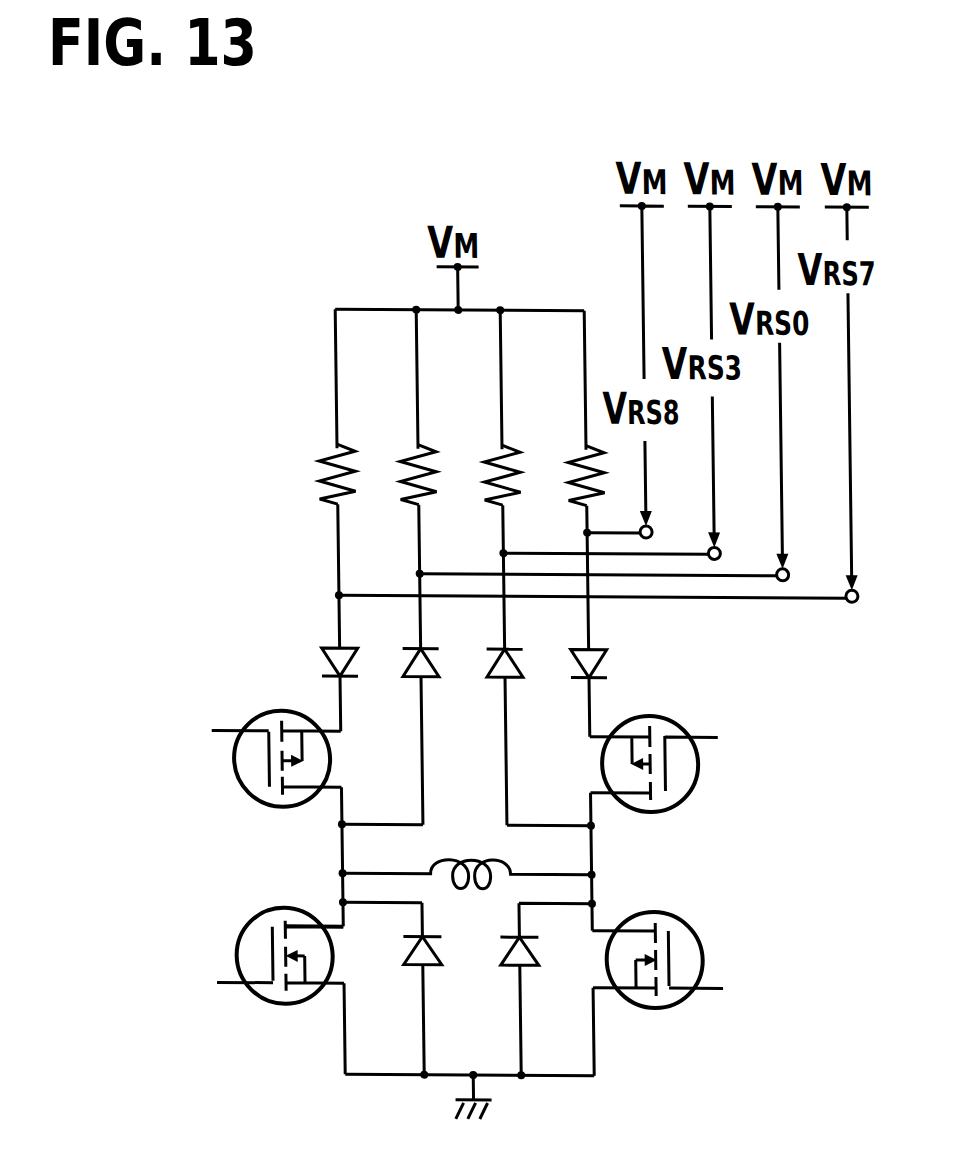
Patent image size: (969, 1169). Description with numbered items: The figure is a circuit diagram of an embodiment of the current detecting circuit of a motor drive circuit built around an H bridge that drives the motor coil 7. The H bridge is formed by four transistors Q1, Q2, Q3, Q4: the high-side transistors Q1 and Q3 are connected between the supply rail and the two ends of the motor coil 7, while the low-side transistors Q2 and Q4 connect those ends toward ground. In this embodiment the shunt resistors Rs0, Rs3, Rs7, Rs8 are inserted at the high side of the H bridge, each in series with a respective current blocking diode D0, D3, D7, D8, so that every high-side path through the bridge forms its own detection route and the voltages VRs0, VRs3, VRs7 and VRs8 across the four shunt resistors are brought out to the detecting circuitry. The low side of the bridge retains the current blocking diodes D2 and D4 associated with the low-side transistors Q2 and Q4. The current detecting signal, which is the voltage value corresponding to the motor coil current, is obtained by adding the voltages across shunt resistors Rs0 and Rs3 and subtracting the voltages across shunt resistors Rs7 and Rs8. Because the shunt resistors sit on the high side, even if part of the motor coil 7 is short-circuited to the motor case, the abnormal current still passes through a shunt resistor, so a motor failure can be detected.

The motor coil 7 is at (464, 852).
The shunt resistor Rs7 is at (339, 446).
The shunt resistor Rs0 is at (420, 446).
The shunt resistor Rs3 is at (504, 446).
The shunt resistor Rs8 is at (588, 446).
The current blocking diode D7 is at (337, 648).
The current blocking diode D0 is at (418, 678).
The current blocking diode D3 is at (505, 678).
The current blocking diode D8 is at (590, 650).
The current blocking diode D2 is at (415, 967).
The current blocking diode D4 is at (518, 967).
The MOSFET transistor Q1 is at (259, 760).
The MOSFET transistor Q2 is at (262, 954).
The MOSFET transistor Q3 is at (675, 766).
The MOSFET transistor Q4 is at (679, 958).